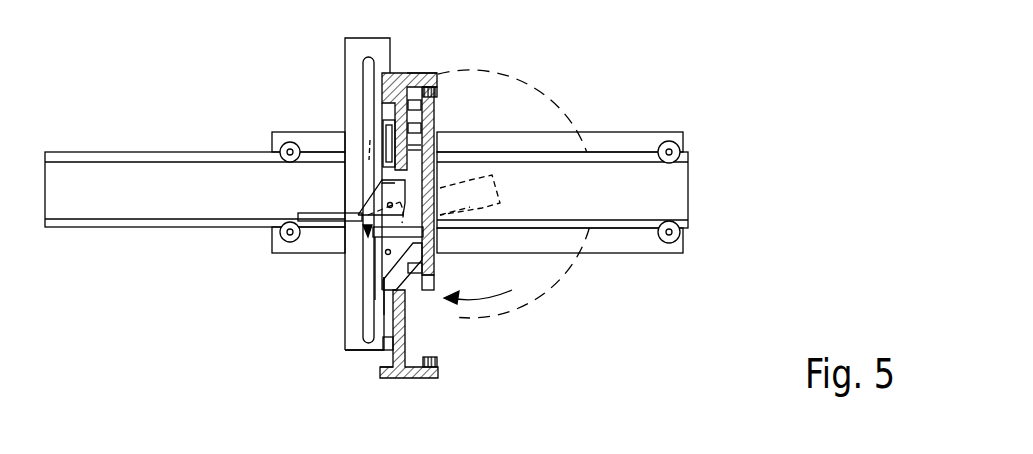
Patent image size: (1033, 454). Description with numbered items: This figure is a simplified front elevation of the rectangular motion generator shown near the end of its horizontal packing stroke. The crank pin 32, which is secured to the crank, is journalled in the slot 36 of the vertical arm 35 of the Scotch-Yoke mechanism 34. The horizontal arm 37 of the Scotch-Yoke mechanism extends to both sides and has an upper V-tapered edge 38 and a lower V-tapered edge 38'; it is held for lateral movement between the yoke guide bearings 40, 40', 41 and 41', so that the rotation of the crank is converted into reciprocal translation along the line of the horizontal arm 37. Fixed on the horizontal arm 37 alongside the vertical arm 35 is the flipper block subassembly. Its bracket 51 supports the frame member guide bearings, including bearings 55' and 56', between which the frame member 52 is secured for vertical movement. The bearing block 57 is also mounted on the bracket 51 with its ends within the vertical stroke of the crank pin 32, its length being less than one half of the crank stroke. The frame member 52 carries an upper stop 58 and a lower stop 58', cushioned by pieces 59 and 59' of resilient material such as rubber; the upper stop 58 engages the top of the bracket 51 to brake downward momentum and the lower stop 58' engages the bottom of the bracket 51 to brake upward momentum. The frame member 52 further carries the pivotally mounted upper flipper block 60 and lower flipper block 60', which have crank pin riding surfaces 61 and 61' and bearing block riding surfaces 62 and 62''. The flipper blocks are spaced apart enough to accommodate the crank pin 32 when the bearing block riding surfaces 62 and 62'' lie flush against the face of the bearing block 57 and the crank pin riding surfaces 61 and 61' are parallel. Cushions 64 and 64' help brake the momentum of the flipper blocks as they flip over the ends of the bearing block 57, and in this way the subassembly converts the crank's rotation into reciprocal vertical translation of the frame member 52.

The crank pin 32 is at (368, 238).
The Scotch-Yoke mechanism 34 is at (619, 131).
The vertical arm 35 is at (350, 352).
The slot 36 is at (370, 60).
The horizontal arm 37 is at (167, 174).
The upper V-tapered edge 38 is at (195, 136).
The lower V-tapered edge 38' is at (195, 242).
The yoke guide bearing 40 is at (308, 118).
The yoke guide bearing 40' is at (302, 257).
The yoke guide bearing 41 is at (560, 131).
The yoke guide bearing 41' is at (563, 258).
The bracket 51 is at (438, 128).
The frame member 52 is at (407, 73).
The frame member guide bearing 55' is at (458, 112).
The frame member guide bearing 56' is at (427, 299).
The bearing block 57 is at (436, 146).
The upper stop 58 is at (429, 55).
The lower stop 58' is at (412, 353).
The resilient cushion piece 59 is at (458, 71).
The resilient cushion piece 59' is at (454, 349).
The upper flipper block 60 is at (330, 204).
The lower flipper block 60' is at (349, 343).
The crank pin riding surface 61 is at (363, 240).
The crank pin riding surface 61' is at (343, 305).
The bearing block riding surface 62 is at (434, 192).
The bearing block riding surface 62'' is at (456, 201).
The cushion 64 is at (342, 119).
The cushion 64' is at (370, 386).